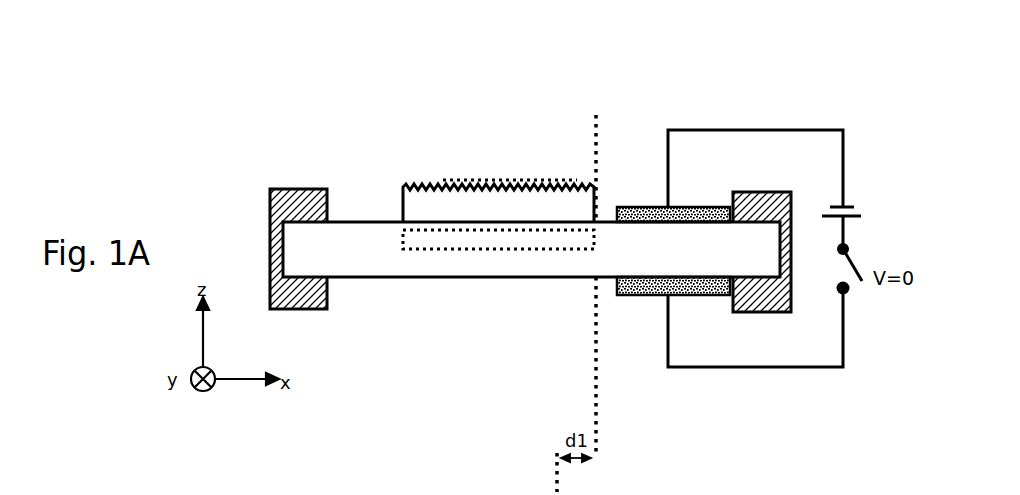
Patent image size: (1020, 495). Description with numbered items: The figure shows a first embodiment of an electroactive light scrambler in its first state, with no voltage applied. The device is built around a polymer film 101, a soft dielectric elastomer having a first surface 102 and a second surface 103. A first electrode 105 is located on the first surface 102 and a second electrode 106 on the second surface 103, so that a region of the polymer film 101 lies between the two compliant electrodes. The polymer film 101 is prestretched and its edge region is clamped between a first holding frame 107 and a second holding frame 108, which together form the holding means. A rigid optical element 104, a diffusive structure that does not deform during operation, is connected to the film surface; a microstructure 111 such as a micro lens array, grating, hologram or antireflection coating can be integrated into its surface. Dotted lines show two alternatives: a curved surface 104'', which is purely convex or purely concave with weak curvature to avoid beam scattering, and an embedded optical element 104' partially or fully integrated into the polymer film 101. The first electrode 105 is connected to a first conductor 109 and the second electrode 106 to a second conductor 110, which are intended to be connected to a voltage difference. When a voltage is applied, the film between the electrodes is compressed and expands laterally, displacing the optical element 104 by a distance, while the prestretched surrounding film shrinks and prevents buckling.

The polymer film 101 is at (531, 238).
The first surface 102 is at (531, 238).
The second surface 103 is at (362, 222).
The rigid optical element 104 is at (509, 117).
The embedded optical element 104' is at (493, 345).
The curved surface of optical element 104'' is at (509, 117).
The first electrode 105 is at (653, 288).
The second electrode 106 is at (640, 213).
The first holding frame 107 is at (250, 194).
The second holding frame 108 is at (303, 199).
The first conductor 109 is at (755, 367).
The second conductor 110 is at (752, 130).
The microstructure 111 is at (509, 117).